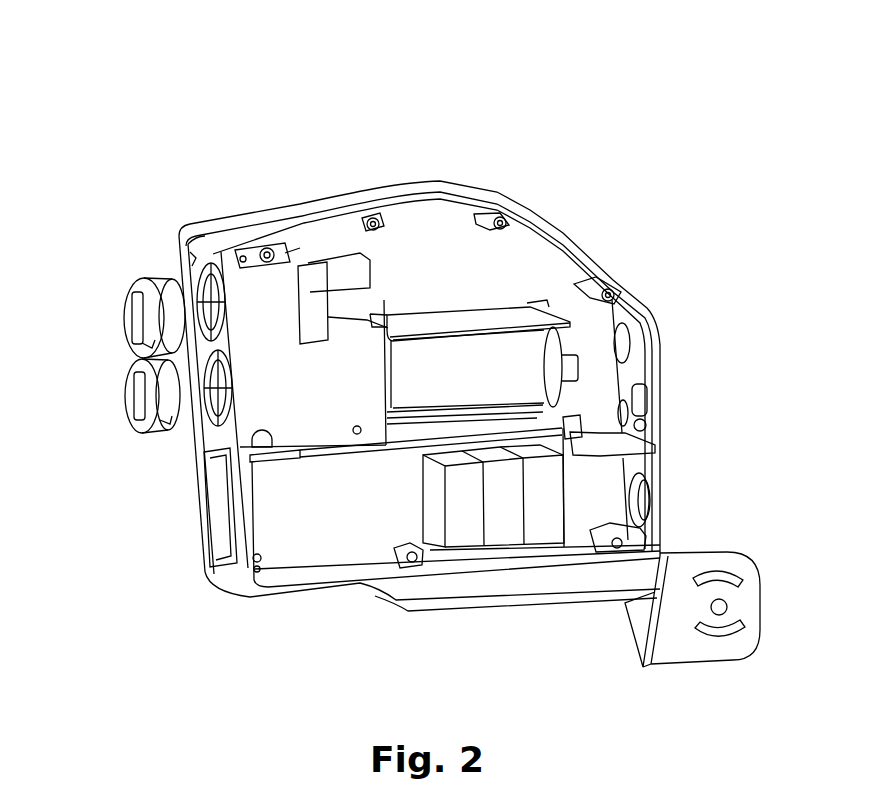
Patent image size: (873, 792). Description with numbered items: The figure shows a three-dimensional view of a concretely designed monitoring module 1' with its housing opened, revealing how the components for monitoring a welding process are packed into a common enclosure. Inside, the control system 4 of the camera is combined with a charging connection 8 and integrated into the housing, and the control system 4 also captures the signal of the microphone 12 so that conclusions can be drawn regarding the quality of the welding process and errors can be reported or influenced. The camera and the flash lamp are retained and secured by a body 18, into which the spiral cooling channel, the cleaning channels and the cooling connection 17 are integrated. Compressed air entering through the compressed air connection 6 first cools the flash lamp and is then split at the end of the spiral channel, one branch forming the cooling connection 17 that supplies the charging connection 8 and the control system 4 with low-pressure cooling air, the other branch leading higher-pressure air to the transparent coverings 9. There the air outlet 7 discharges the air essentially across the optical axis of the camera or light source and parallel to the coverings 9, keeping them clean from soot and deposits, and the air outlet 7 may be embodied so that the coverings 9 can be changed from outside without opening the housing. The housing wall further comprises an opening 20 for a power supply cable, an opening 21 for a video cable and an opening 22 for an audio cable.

The monitoring module 1' is at (460, 365).
The control system 4 is at (307, 520).
The compressed air connection 6 is at (645, 428).
The air outlet 7 is at (155, 293).
The charging connection 8 is at (410, 513).
The covering 9 is at (148, 348).
The microphone 12 is at (192, 262).
The cooling connection 17 is at (307, 457).
The body 18 is at (272, 307).
The opening for a power supply cable 20 is at (645, 506).
The opening for a video cable 21 is at (627, 345).
The opening for an audio cable 22 is at (645, 407).